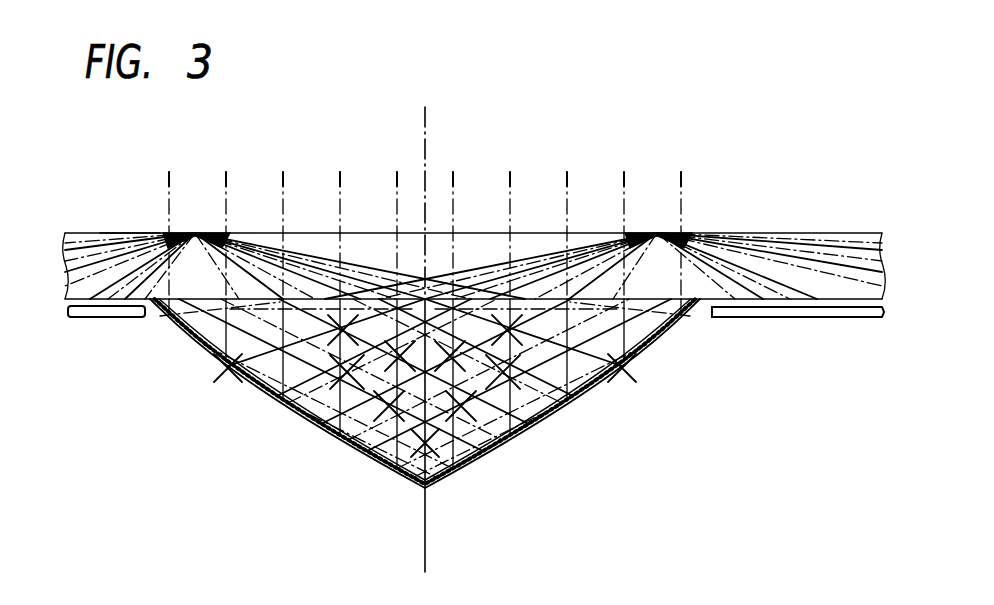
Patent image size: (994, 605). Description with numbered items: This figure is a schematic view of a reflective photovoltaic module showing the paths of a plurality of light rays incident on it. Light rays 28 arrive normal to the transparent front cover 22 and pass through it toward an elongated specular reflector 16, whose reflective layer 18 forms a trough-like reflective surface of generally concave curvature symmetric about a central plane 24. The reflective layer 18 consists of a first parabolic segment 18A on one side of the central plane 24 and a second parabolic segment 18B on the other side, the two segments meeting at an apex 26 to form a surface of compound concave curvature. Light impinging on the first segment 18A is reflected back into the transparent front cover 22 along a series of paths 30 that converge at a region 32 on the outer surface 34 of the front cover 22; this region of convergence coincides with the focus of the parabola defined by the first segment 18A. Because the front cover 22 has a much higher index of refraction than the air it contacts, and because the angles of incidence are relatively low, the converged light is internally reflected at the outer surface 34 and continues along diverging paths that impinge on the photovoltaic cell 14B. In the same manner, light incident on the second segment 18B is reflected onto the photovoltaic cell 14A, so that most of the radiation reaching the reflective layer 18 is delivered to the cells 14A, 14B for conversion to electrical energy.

The photovoltaic cell 14A is at (130, 317).
The photovoltaic cell 14B is at (798, 317).
The elongated specular reflector 16 is at (258, 408).
The reflective layer 18 is at (585, 405).
The first parabolic segment 18A is at (228, 366).
The second parabolic segment 18B is at (651, 363).
The transparent front cover 22 is at (86, 233).
The central plane 24 is at (428, 138).
The apex 26 is at (422, 488).
The light rays normal to the front cover 28 is at (228, 180).
The paths 30 is at (557, 260).
The region of convergence 32 is at (195, 233).
The outer surface 34 is at (130, 233).